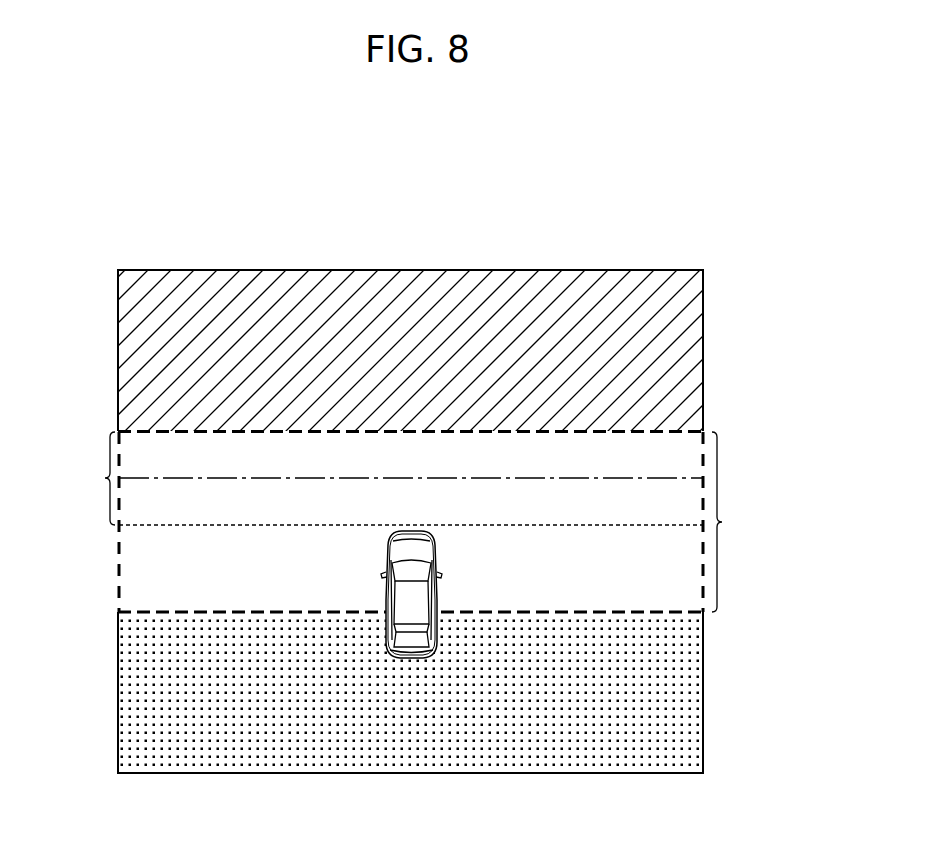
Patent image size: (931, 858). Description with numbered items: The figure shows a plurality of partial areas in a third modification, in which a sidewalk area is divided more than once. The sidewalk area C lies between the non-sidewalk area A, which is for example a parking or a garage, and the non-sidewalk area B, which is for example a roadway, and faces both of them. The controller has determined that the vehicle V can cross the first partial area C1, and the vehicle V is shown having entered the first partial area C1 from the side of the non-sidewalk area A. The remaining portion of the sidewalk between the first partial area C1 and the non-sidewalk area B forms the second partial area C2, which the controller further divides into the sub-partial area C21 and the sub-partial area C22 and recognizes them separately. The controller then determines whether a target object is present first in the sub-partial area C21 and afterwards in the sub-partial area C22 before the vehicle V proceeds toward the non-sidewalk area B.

The non-sidewalk area B is at (695, 356).
The sidewalk area C is at (430, 522).
The sub-partial area C22 is at (670, 451).
The sub-partial area C21 is at (670, 490).
The second partial area C2 is at (387, 478).
The first partial area C1 is at (127, 580).
The non-sidewalk area A is at (697, 690).
The vehicle V is at (408, 660).